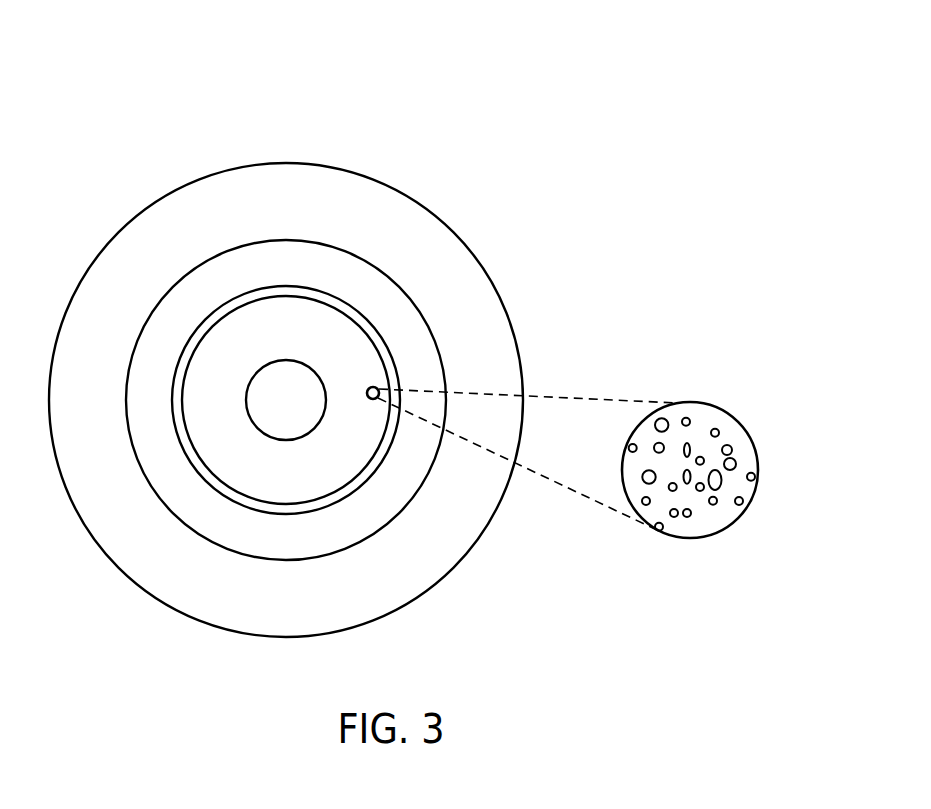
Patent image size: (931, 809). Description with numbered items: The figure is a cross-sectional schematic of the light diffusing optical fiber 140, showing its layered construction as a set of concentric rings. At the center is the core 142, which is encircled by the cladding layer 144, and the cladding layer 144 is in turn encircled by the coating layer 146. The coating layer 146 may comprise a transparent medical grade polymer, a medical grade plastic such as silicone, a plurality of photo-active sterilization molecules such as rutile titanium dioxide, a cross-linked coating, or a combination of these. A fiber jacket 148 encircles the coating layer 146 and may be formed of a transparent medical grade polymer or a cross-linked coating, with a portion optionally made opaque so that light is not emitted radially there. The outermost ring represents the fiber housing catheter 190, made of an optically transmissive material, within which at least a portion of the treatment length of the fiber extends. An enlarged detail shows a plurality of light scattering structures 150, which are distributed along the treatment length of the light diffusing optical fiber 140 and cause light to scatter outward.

The light diffusing optical fiber 140 is at (411, 331).
The core 142 is at (280, 371).
The cladding layer 144 is at (322, 318).
The coating layer 146 is at (278, 291).
The fiber jacket 148 is at (310, 255).
The light scattering structures 150 is at (716, 430).
The fiber housing catheter 190 is at (325, 176).